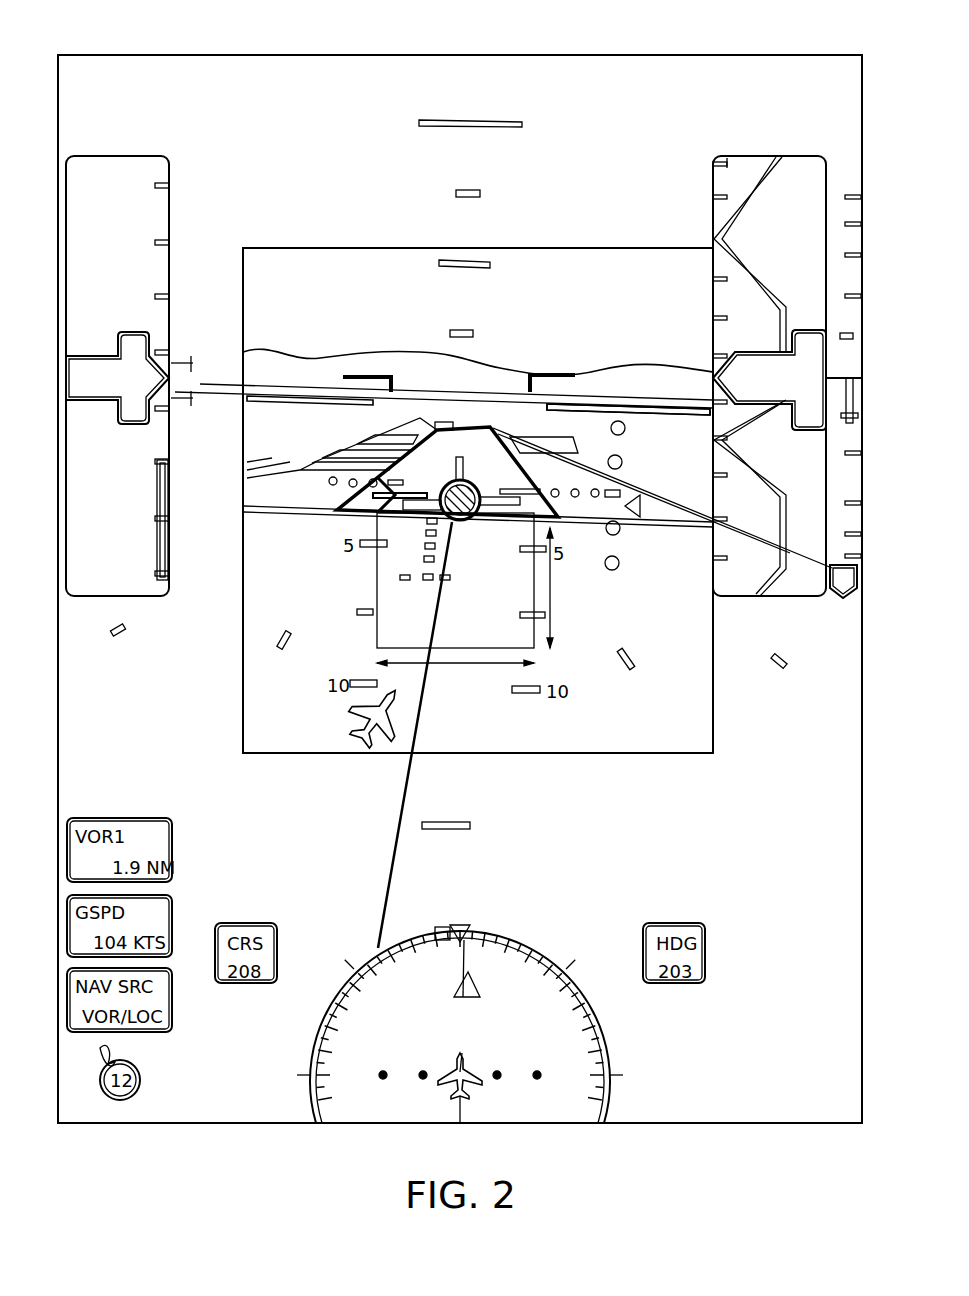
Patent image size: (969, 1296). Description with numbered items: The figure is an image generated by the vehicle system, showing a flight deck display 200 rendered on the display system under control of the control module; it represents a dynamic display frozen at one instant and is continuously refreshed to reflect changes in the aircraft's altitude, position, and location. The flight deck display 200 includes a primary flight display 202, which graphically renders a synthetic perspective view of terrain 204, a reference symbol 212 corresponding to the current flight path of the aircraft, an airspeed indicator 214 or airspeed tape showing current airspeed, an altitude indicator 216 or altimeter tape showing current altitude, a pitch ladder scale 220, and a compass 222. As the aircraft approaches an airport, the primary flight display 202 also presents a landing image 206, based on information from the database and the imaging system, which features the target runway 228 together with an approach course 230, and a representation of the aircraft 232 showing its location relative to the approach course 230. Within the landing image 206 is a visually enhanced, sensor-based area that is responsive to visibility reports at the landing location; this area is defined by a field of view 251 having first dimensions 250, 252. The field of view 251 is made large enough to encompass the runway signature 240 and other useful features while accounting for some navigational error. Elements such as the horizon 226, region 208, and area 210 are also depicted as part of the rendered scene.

The flight deck display 200 is at (862, 323).
The primary flight display 202 is at (198, 104).
The synthetic perspective view of terrain 204 is at (760, 885).
The landing image 206 is at (650, 753).
The synthetic vision terrain region 208 is at (282, 551).
The attitude display area 210 is at (545, 265).
The reference symbol 212 is at (462, 522).
The airspeed indicator 214 is at (60, 480).
The altitude indicator 216 is at (836, 478).
The pitch ladder scale 220 is at (461, 96).
The compass 222 is at (545, 925).
The horizon line 226 is at (486, 346).
The runway 228 is at (557, 538).
The approach course 230 is at (403, 803).
The representation of the aircraft 232 is at (352, 722).
The runway signature 240 is at (398, 578).
The first dimension 250 is at (455, 665).
The field of view 251 is at (514, 644).
The first dimension 252 is at (555, 625).